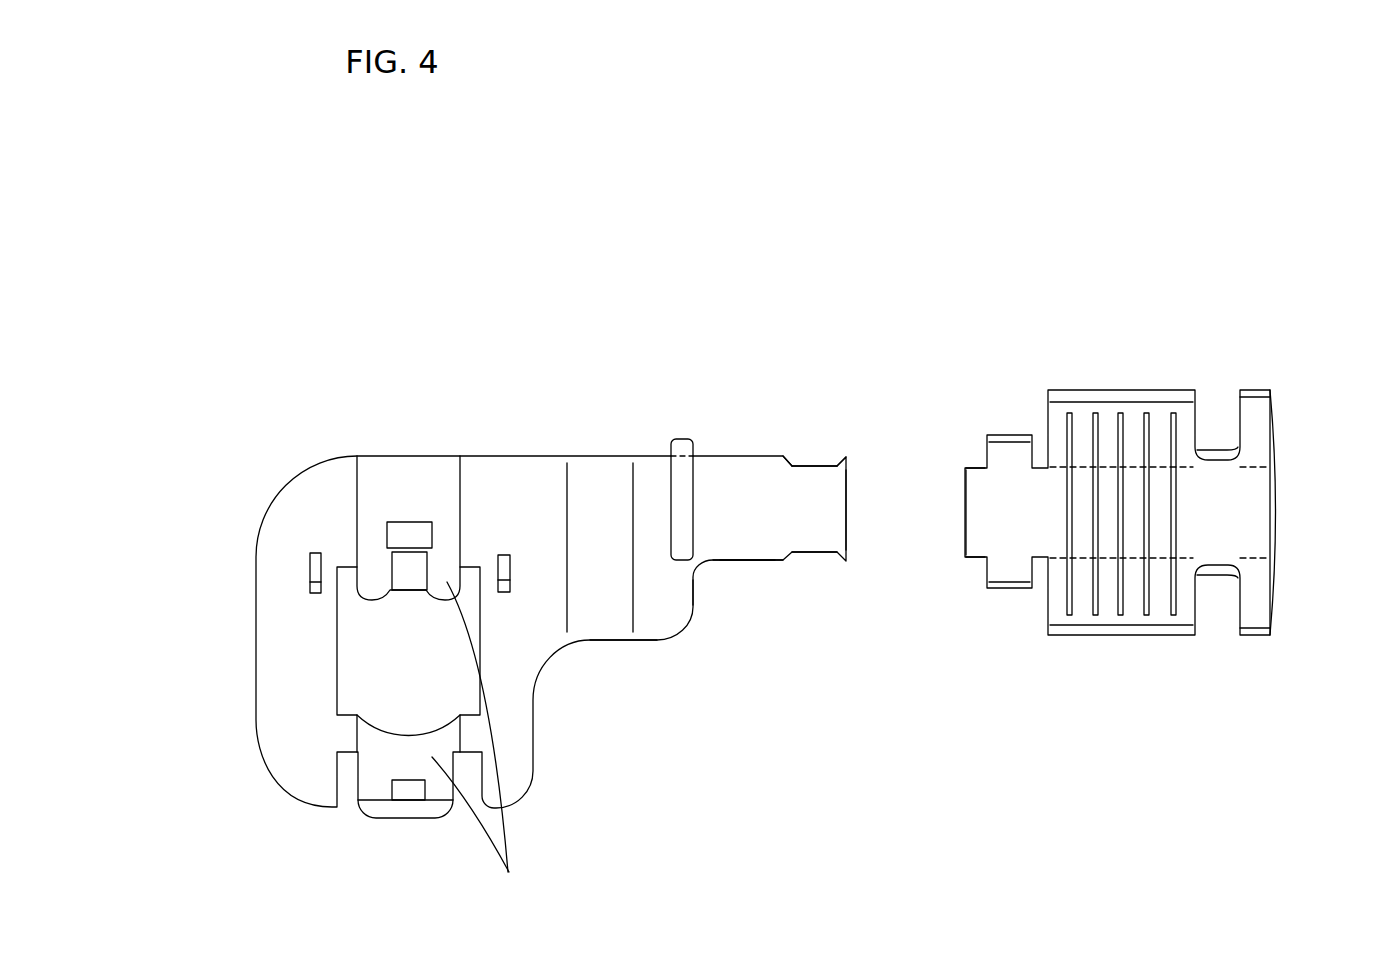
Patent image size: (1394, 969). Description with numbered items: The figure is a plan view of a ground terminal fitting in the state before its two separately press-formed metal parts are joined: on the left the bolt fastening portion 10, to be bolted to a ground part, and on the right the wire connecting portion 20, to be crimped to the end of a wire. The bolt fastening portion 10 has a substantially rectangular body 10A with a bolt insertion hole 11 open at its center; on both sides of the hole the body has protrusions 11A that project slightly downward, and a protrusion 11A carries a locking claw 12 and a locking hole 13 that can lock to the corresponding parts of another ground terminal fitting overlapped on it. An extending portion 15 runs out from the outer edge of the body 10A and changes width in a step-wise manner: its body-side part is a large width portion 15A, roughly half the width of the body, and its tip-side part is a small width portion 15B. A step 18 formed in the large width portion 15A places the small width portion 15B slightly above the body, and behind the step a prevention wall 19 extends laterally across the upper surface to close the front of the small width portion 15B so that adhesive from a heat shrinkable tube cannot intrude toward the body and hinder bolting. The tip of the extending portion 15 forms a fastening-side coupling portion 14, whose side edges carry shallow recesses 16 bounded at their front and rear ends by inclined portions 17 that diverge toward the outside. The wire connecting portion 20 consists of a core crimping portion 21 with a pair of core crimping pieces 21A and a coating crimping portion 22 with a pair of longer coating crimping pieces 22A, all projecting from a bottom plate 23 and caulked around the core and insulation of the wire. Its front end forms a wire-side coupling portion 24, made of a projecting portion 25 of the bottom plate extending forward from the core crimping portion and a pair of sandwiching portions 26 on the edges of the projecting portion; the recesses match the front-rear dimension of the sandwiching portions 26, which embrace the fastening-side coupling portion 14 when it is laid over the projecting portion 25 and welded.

The bolt fastening portion 10 is at (522, 262).
The body 10A is at (285, 647).
The bolt insertion hole 11 is at (340, 643).
The protrusion 11A is at (484, 745).
The locking claw 12 is at (412, 790).
The locking hole 13 is at (432, 537).
The fastening-side coupling portion 14 is at (830, 517).
The extending portion 15 is at (618, 773).
The large width portion 15A is at (610, 620).
The small width portion 15B is at (735, 547).
The recess 16 is at (813, 465).
The inclined portion 17 is at (790, 465).
The step 18 is at (606, 495).
The prevention wall 19 is at (683, 493).
The wire connecting portion 20 is at (1115, 245).
The core crimping portion 21 is at (1135, 540).
The core crimping piece 21A is at (1163, 402).
The coating crimping portion 22 is at (1257, 523).
The coating crimping piece 22A is at (1262, 397).
The bottom plate 23 is at (1208, 523).
The wire-side coupling portion 24 is at (937, 673).
The projecting portion 25 is at (990, 513).
The sandwiching portion 26 is at (1015, 450).